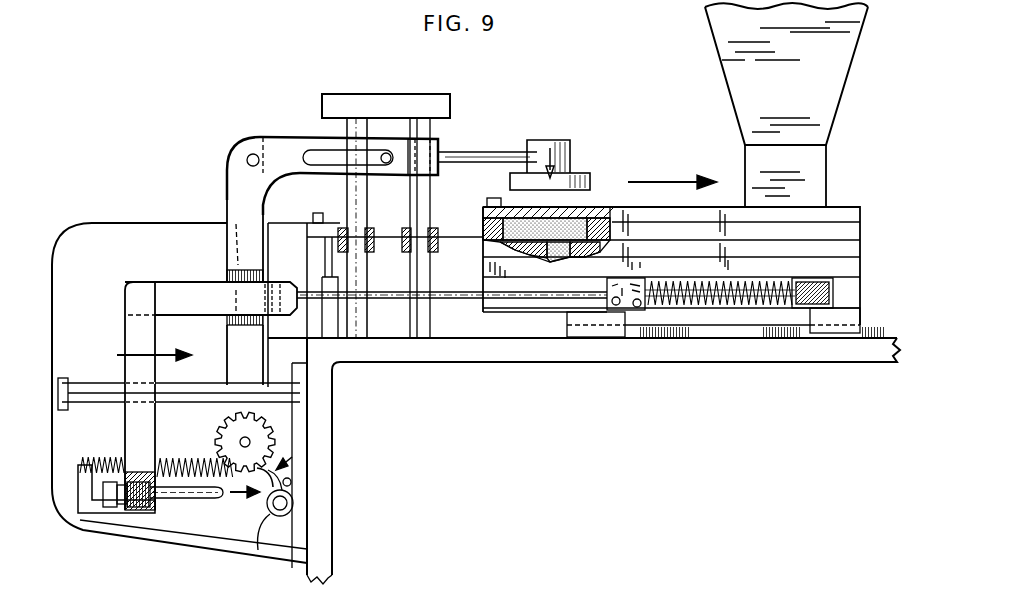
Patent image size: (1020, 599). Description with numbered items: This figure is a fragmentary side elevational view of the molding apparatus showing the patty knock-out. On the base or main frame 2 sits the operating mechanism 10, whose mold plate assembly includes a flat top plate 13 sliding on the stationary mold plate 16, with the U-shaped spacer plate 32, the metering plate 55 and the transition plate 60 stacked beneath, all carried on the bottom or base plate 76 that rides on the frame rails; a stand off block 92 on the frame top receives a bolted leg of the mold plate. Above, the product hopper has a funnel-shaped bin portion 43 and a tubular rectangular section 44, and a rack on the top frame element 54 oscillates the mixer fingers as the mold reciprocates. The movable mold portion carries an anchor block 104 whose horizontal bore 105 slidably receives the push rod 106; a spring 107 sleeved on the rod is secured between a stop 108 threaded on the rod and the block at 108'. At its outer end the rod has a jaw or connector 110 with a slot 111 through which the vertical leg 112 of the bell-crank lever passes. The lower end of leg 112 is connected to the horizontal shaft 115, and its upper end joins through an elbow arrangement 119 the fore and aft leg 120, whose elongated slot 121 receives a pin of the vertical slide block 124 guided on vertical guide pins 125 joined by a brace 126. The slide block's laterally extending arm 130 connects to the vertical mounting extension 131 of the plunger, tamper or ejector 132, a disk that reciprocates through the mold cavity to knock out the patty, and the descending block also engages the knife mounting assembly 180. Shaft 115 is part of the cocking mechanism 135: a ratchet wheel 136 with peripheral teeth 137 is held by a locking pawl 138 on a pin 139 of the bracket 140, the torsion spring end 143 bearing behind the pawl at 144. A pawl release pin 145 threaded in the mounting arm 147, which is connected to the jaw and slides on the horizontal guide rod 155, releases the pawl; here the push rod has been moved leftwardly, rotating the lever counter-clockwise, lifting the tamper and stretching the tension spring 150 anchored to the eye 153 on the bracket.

The base or main frame 2 is at (897, 343).
The operating mechanism 10 is at (832, 172).
The flat top plate 13 is at (862, 210).
The stationary mold plate 16 is at (453, 223).
The U-shaped spacer plate 32 is at (862, 232).
The funnel-shaped bin portion 43 is at (717, 68).
The tubular rectangular section 44 is at (752, 173).
The top frame element 54 is at (83, 495).
The metering plate 55 is at (862, 248).
The transition plate 60 is at (862, 265).
The bottom or base plate 76 is at (863, 295).
The stand off block or support 92 is at (313, 266).
The anchor block 104 is at (615, 310).
The horizontal bore 105 is at (627, 310).
The push rod 106 is at (463, 297).
The spring 107 is at (727, 303).
The stop 108 is at (833, 338).
The spring securing point 108' is at (725, 373).
The jaw or connector 110 is at (168, 290).
The slot 111 is at (227, 222).
The vertical leg 112 is at (230, 198).
The horizontal shaft 115 is at (250, 440).
The elbow arrangement 119 is at (248, 147).
The fore and aft extending leg 120 is at (280, 143).
The elongated slot 121 is at (337, 153).
The vertical slide block 124 is at (440, 143).
The vertical guide pins 125 is at (437, 187).
The brace 126 is at (375, 107).
The laterally extending arm 130 is at (493, 153).
The vertical mounting extension 131 is at (577, 150).
The plunger, tamper or ejector 132 is at (587, 178).
The cocking mechanism 135 is at (292, 465).
The ratchet wheel 136 is at (262, 438).
The peripheral teeth 137 is at (276, 452).
The locking pawl 138 is at (290, 486).
The pin 139 is at (293, 497).
The bracket 140 is at (82, 527).
The other end of torsion spring 143 is at (291, 476).
The pawl bearing point 144 is at (272, 523).
The pawl release pin 145 is at (208, 497).
The mounting arm 147 is at (127, 372).
The tension spring 150 is at (200, 457).
The eye 153 is at (82, 460).
The horizontal guide rod 155 is at (85, 377).
The knife mounting assembly 180 is at (403, 252).